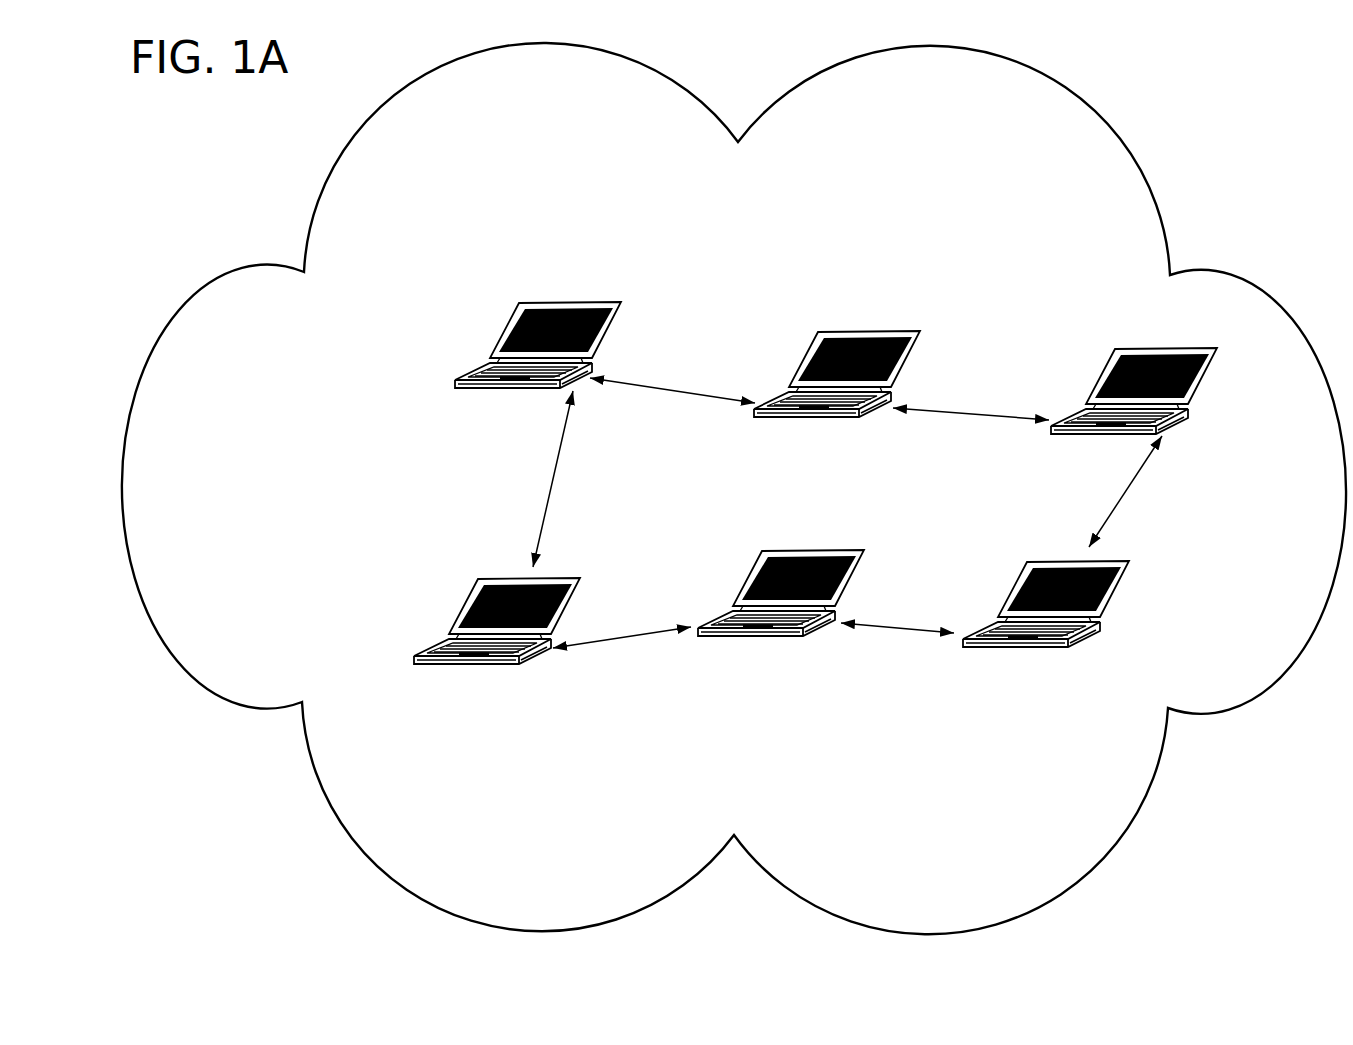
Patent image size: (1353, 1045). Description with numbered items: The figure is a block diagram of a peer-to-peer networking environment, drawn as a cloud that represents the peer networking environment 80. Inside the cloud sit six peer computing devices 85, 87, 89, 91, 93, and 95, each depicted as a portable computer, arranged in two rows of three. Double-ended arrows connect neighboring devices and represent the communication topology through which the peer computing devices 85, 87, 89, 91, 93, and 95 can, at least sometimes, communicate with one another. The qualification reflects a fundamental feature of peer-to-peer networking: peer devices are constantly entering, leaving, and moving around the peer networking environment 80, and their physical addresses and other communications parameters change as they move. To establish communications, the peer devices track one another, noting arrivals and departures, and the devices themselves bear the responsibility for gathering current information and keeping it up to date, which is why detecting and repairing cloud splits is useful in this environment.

The peer networking environment 80 is at (927, 93).
The peer computing device 85 is at (538, 363).
The peer computing device 87 is at (497, 639).
The peer computing device 89 is at (837, 392).
The peer computing device 91 is at (781, 611).
The peer computing device 93 is at (1134, 408).
The peer computing device 95 is at (1046, 622).